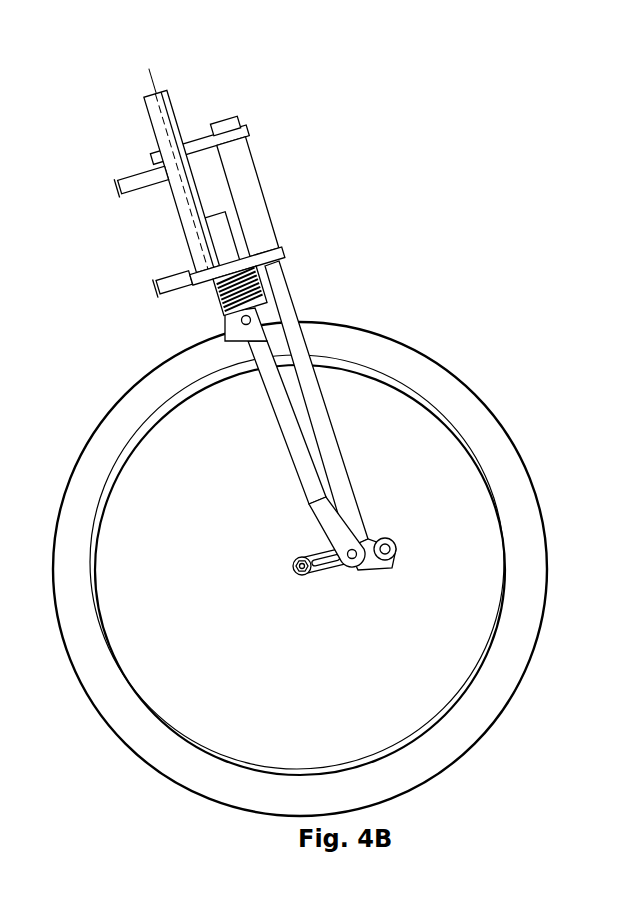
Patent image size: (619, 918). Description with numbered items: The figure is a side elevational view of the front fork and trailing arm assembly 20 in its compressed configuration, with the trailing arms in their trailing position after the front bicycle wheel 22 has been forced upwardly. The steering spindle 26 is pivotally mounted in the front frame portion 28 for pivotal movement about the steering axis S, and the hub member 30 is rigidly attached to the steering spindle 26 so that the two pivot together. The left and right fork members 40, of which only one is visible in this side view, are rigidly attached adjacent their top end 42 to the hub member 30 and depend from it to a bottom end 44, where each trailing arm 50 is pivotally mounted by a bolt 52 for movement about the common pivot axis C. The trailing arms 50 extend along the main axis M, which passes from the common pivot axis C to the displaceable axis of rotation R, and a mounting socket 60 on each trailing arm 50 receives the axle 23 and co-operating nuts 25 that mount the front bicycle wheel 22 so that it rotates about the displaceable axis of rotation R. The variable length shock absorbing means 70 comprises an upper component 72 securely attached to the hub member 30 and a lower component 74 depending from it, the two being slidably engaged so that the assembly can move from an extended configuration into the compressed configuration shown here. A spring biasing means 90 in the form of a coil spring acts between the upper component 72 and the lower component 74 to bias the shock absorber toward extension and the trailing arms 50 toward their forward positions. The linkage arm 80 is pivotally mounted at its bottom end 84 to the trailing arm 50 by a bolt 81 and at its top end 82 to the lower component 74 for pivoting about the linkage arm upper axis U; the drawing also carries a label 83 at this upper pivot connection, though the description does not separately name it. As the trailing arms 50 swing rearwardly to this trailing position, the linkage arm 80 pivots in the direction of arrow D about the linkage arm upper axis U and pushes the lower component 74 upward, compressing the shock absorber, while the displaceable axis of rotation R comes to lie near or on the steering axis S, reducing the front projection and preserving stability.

The front fork and trailing arm assembly 20 is at (390, 235).
The front bicycle wheel 22 is at (481, 384).
The axle 23 is at (291, 568).
The co-operating nuts 25 is at (285, 556).
The steering spindle 26 is at (176, 204).
The front frame portion 28 is at (211, 77).
The hub member 30 is at (191, 273).
The fork members 40 is at (281, 291).
The top end 42 is at (238, 168).
The bottom end 44 is at (357, 525).
The trailing arms 50 is at (296, 548).
The bolts 52 is at (385, 535).
The mounting sockets 60 is at (297, 566).
The variable length shock absorbing means 70 is at (121, 333).
The upper component 72 is at (212, 284).
The lower component 74 is at (217, 333).
The linkage arm 80 is at (278, 443).
The bolt 81 is at (352, 548).
The top end 82 is at (253, 313).
The pivot axis 83 is at (243, 309).
The bottom end 84 is at (330, 560).
The spring biasing means 90 is at (255, 265).
The steering axis S is at (139, 81).
The arrow D is at (8, 387).
The linkage arm upper axis U is at (216, 320).
The main axis M is at (389, 543).
The common pivot axis C is at (378, 560).
The displaceable axis of rotation R is at (288, 565).